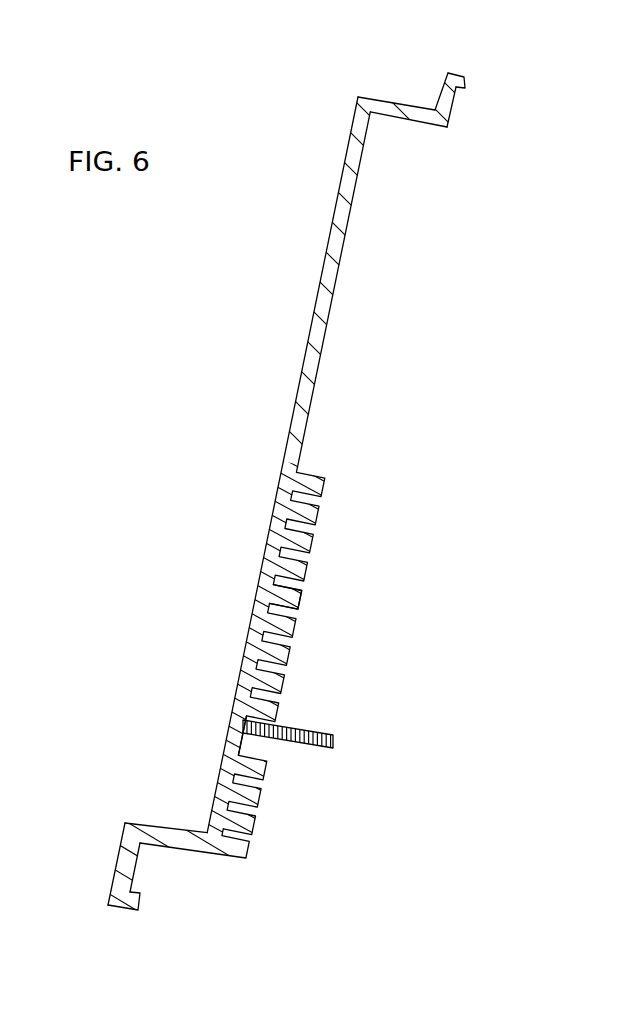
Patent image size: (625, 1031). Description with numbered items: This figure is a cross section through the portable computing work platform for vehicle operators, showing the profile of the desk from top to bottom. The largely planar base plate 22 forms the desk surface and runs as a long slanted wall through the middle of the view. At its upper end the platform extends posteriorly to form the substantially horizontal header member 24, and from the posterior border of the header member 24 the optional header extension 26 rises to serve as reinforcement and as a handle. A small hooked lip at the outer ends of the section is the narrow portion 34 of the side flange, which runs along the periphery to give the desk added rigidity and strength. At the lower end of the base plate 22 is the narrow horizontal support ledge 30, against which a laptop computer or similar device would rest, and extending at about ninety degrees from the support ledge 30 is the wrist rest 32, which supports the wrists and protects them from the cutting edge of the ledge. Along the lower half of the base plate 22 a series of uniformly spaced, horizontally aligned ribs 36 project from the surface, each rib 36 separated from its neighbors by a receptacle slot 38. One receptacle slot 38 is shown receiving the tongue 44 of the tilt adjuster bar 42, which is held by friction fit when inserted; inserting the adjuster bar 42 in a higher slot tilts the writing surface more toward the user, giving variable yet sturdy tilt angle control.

The base plate 22 is at (333, 228).
The header member 24 is at (400, 102).
The header extension 26 is at (440, 90).
The narrow portion of side flange 34 is at (468, 80).
The ribs 36 is at (290, 573).
The receptacle slot 38 is at (300, 613).
The support ledge 30 is at (165, 835).
The wrist rest 32 is at (125, 853).
The tilt adjuster bar 42 is at (333, 735).
The tongue 44 is at (243, 721).